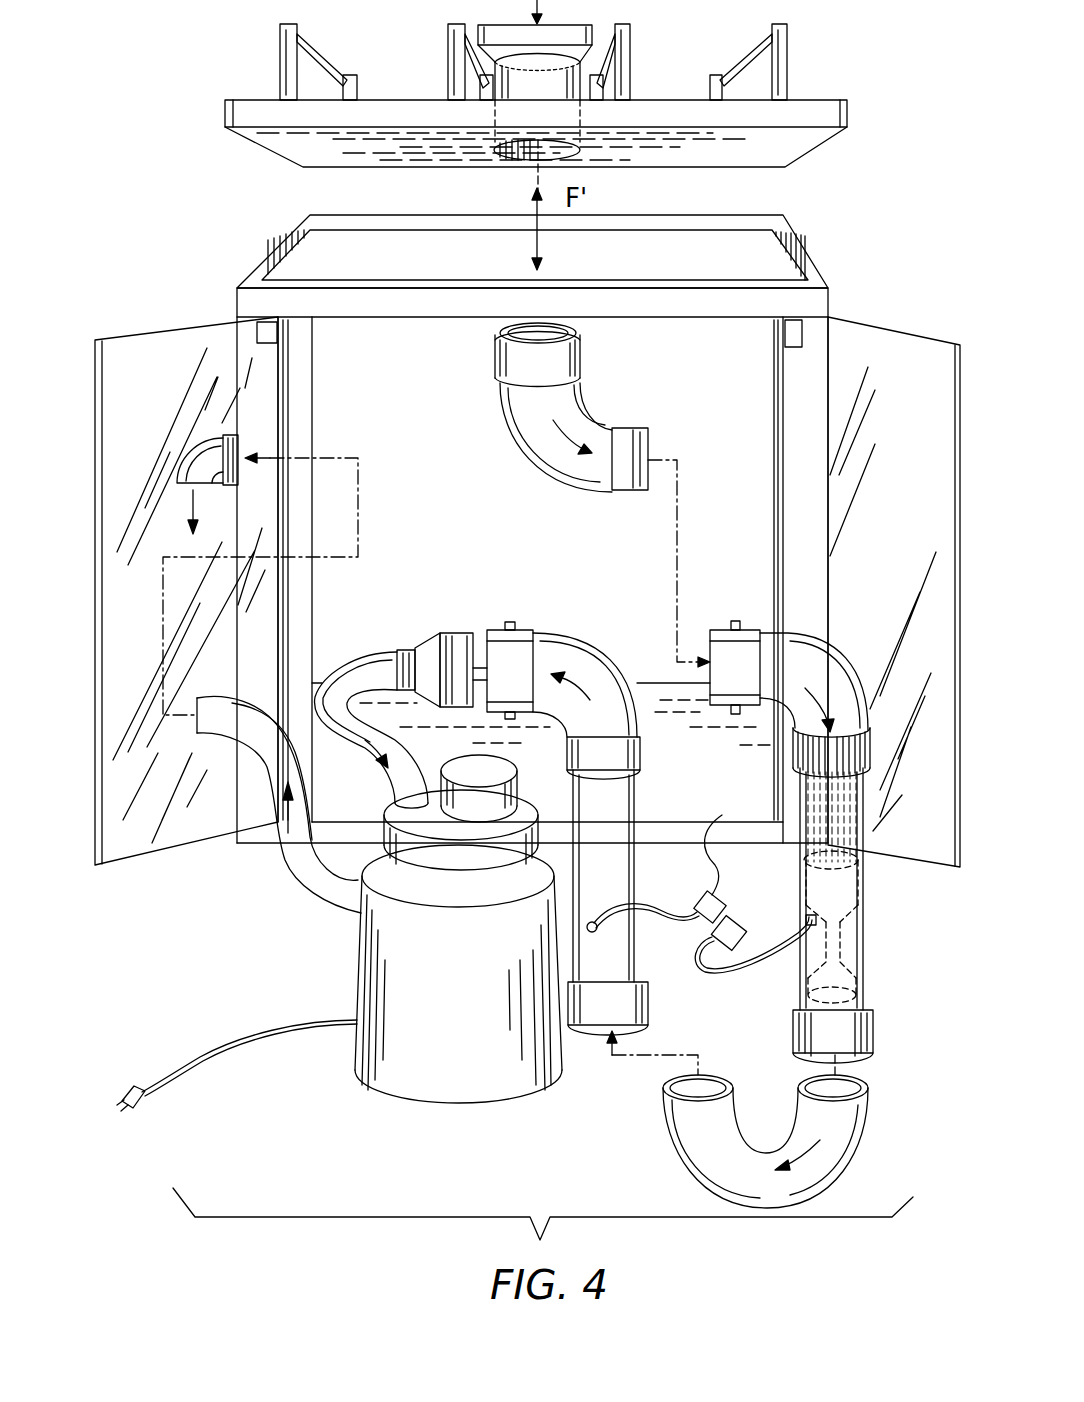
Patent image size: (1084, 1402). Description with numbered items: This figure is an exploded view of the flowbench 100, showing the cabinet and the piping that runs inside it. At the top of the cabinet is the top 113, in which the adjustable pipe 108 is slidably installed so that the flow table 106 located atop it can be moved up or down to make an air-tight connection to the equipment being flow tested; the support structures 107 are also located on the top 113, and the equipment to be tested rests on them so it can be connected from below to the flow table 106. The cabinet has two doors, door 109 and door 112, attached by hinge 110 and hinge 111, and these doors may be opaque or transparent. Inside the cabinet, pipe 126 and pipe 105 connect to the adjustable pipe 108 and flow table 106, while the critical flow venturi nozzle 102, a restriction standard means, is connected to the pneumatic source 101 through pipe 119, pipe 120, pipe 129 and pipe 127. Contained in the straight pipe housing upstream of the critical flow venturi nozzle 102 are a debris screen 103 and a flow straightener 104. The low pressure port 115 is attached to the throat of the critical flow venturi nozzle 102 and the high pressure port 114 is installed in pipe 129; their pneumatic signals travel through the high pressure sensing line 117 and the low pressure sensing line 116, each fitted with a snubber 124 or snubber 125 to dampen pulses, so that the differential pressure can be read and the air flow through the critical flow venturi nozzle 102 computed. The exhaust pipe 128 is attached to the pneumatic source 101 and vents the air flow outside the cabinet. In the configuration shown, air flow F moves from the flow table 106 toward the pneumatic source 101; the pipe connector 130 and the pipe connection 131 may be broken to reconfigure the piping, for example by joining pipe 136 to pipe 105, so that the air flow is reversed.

The flowbench 100 is at (808, 249).
The pneumatic source 101 is at (380, 1080).
The critical flow venturi nozzle 102 is at (862, 958).
The debris screen 103 is at (860, 868).
The flow straightener 104 is at (858, 823).
The pipe 105 is at (815, 645).
The flow table 106 is at (590, 25).
The support structures 107 is at (280, 78).
The adjustable pipe 108 is at (510, 72).
The door 109 is at (190, 330).
The hinge 110 is at (280, 373).
The hinge 111 is at (772, 385).
The door 112 is at (853, 328).
The top 113 is at (833, 95).
The high pressure port 114 is at (587, 928).
The low pressure port 115 is at (808, 918).
The low pressure sensing line 116 is at (740, 972).
The high pressure sensing line 117 is at (700, 905).
The pipe 119 is at (358, 668).
The pipe 120 is at (865, 1130).
The snubber 124 is at (735, 952).
The snubber 125 is at (736, 843).
The pipe 126 is at (520, 443).
The pipe 127 is at (560, 633).
The exhaust pipe 128 is at (190, 452).
The pipe 129 is at (637, 790).
The pipe connector 130 is at (720, 628).
The pipe connection 131 is at (515, 628).
The pipe 136 is at (315, 875).